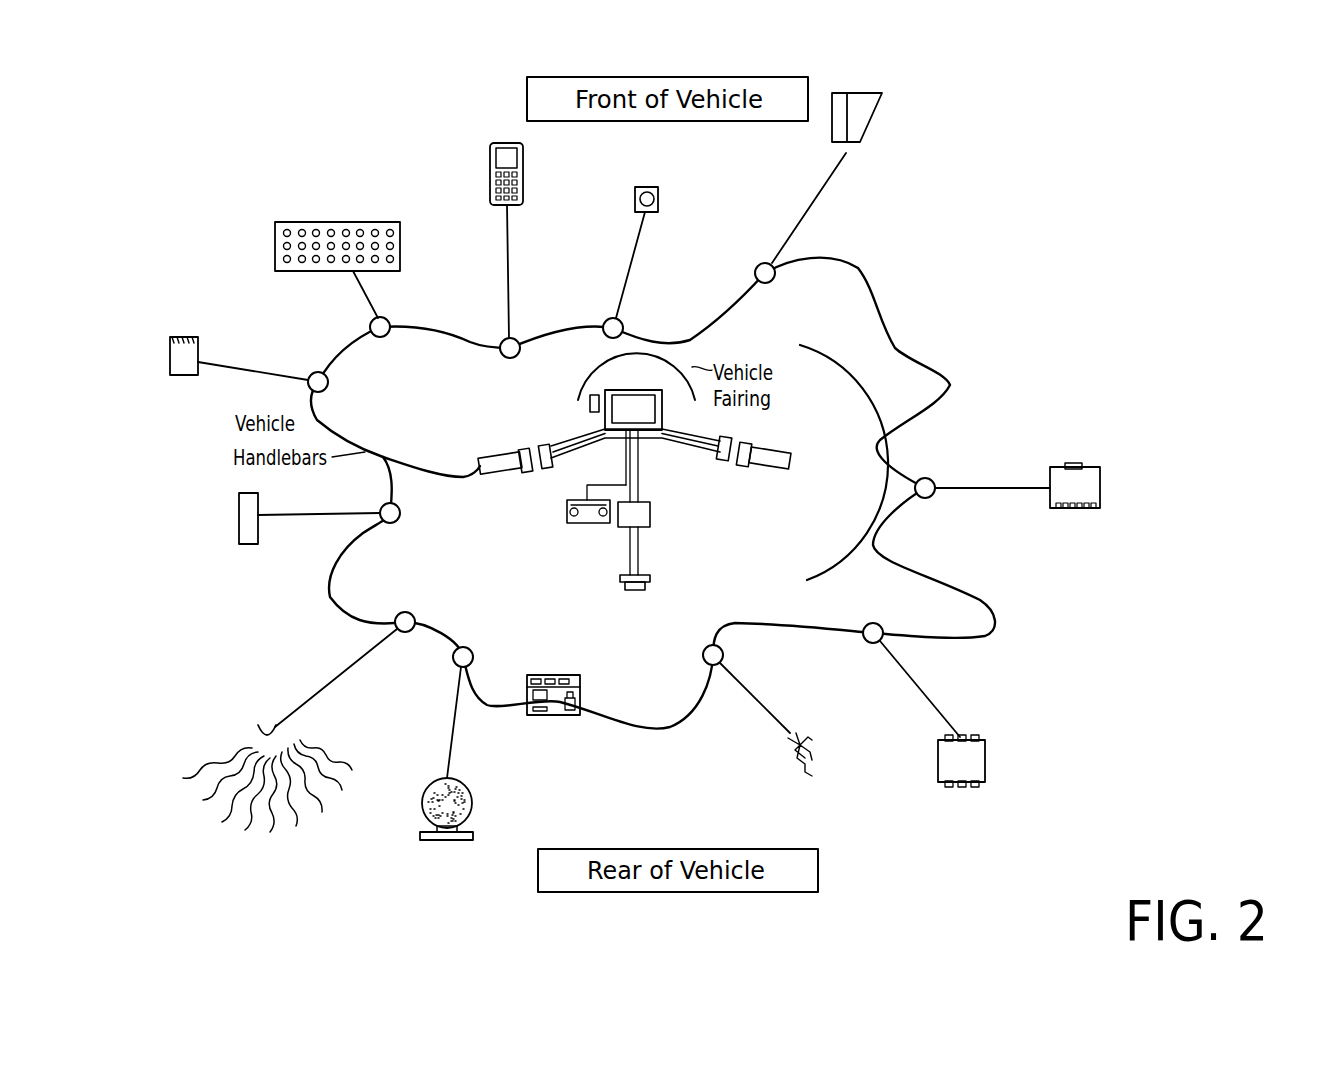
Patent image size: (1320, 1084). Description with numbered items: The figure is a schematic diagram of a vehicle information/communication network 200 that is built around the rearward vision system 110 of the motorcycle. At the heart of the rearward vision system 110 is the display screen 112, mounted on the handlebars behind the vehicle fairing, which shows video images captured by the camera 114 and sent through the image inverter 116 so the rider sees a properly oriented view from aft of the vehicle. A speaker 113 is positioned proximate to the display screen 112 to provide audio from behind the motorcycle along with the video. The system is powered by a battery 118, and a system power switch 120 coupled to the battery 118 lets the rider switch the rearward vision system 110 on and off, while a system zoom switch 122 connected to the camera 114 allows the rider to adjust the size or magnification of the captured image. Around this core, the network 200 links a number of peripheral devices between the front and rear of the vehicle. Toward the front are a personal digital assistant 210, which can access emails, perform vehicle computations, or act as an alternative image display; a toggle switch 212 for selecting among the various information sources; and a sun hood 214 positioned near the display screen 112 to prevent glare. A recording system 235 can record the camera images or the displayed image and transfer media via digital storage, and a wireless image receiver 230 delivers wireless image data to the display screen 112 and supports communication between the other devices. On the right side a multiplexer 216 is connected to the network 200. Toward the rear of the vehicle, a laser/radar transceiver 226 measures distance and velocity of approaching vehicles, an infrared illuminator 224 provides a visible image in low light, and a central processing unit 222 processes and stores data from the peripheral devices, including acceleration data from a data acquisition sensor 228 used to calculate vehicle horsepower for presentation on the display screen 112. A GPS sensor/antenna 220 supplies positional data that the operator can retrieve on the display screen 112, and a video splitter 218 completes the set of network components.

The rearward vision system 110 is at (882, 440).
The display screen 112 is at (588, 369).
The speaker 113 is at (590, 403).
The camera 114 is at (620, 578).
The image inverter 116 is at (651, 512).
The battery 118 is at (583, 525).
The system power switch 120 is at (520, 442).
The system zoom switch 122 is at (725, 450).
The vehicle information/communication network 200 is at (880, 325).
The personal digital assistant 210 is at (490, 165).
The toggle switch 212 is at (647, 187).
The sun hood 214 is at (876, 118).
The multiplexer 216 is at (1103, 488).
The video splitter 218 is at (987, 762).
The GPS sensor/antenna 220 is at (777, 734).
The central processing unit 222 is at (553, 716).
The infrared illuminator 224 is at (475, 800).
The laser/radar transceiver 226 is at (255, 730).
The data acquisition sensor 228 is at (248, 545).
The wireless image receiver 230 is at (182, 378).
The recording system 235 is at (343, 220).